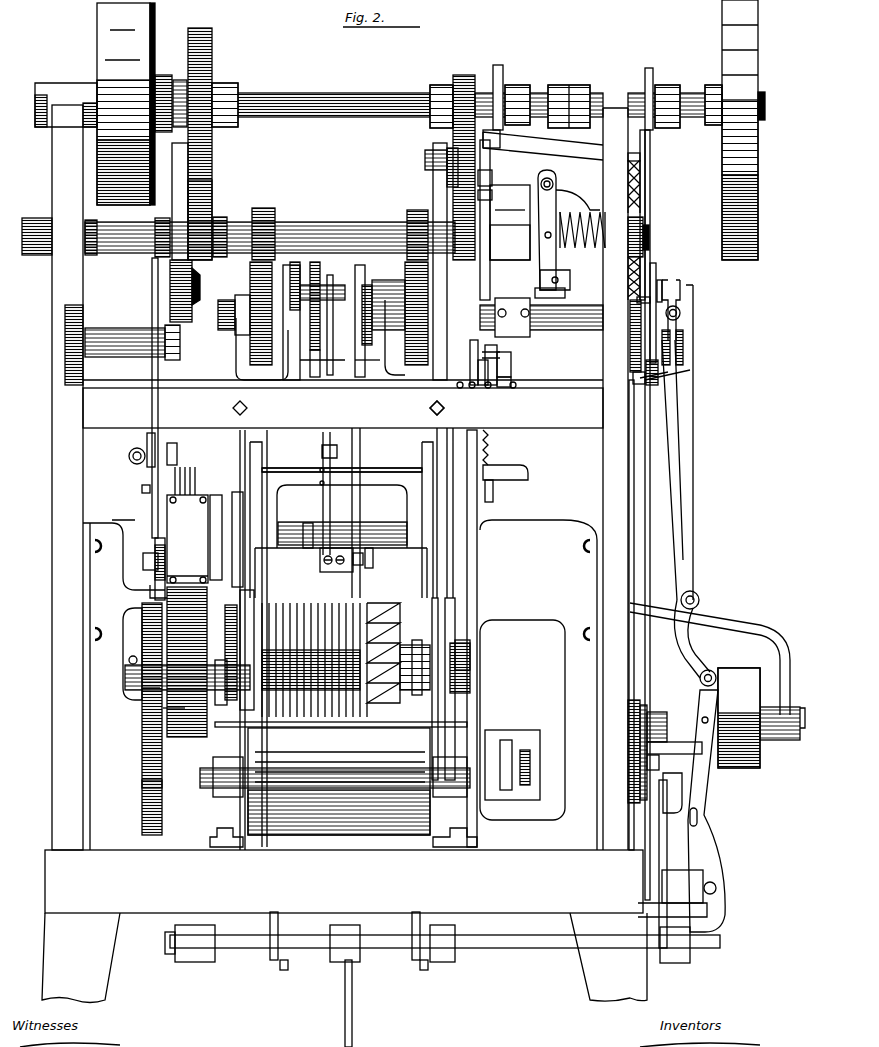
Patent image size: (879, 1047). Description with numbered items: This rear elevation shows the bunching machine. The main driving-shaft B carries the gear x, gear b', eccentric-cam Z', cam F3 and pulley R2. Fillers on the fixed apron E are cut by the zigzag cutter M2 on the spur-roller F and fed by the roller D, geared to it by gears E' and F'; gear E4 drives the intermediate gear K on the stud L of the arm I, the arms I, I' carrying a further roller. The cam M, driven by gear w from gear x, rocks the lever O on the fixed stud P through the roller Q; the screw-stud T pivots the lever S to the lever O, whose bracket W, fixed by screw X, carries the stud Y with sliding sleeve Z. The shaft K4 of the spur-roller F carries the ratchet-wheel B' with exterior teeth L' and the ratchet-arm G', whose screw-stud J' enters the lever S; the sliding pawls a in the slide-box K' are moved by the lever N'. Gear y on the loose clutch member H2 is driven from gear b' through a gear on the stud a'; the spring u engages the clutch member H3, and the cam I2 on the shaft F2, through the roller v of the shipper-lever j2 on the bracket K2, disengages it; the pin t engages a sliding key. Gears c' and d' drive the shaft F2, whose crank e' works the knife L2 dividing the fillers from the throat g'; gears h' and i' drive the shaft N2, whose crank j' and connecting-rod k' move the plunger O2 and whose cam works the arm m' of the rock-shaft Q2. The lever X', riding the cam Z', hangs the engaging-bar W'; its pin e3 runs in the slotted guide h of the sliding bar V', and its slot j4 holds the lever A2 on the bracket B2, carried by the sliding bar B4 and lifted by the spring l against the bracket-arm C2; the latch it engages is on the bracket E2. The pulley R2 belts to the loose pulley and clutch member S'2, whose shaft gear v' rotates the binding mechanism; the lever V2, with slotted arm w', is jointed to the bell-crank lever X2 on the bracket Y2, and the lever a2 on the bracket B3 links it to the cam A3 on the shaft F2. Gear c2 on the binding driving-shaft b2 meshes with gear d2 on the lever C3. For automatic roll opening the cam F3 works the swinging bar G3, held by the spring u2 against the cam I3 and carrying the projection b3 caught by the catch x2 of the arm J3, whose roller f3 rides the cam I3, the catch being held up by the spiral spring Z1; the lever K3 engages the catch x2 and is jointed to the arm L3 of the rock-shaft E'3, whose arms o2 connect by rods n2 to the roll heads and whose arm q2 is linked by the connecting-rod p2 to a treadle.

The fixed stud P is at (143, 342).
The gear x is at (219, 50).
The gear w is at (198, 251).
The main driving-shaft B is at (332, 101).
The gear b' is at (464, 159).
The eccentric-cam Z' is at (507, 96).
The cam F3 is at (650, 72).
The pulley R2 is at (722, 55).
The lever N' is at (270, 232).
The roller Q is at (167, 237).
The cam M is at (180, 201).
The lever O is at (152, 300).
The gear i' is at (271, 229).
The gear d' is at (405, 232).
The sliding sleeve Z is at (427, 261).
The gear y is at (447, 195).
The stud a' is at (491, 220).
The pendent engaging-bar W' is at (493, 177).
The pin t is at (482, 195).
The lever X' is at (501, 139).
The elongated stud Y is at (118, 460).
The clutch member H3 is at (510, 222).
The friction-clutch member H2 is at (523, 246).
The shipper-lever j2 is at (547, 230).
The bracket K2 is at (585, 200).
The connecting-rod p2 is at (645, 172).
The spring u2 is at (645, 202).
The shaft N2 is at (218, 318).
The gear h' is at (262, 321).
The bracket E2 is at (295, 321).
The crank j' is at (322, 319).
The connecting-rod k' is at (334, 325).
The crank e' is at (369, 320).
The gear c' is at (400, 318).
The arm m' is at (322, 367).
The throat g' is at (367, 367).
The slotted guide h is at (465, 362).
The guiding pin e3 is at (478, 366).
The slot j4 is at (496, 361).
The bracket B2 is at (512, 364).
The lever A2 is at (496, 376).
The shaft F2 is at (578, 326).
The spiral spring u is at (572, 282).
The roller v is at (563, 280).
The cam I2 is at (550, 294).
The sliding bar V' is at (450, 405).
The arm J3 is at (640, 485).
The cam I3 is at (656, 288).
The roller f3 is at (666, 283).
The spiral spring Z1 is at (645, 400).
The catch x2 is at (657, 372).
The projection b3 is at (665, 377).
The swinging bar G3 is at (676, 366).
The cam A3 is at (682, 296).
The lever a2 is at (683, 400).
The bracket B3 is at (670, 460).
The lever K3 is at (668, 568).
The slotted arm w' is at (717, 670).
The lever V2 is at (716, 683).
The loose pulley and friction-clutch member S'2 is at (739, 718).
The bell-crank lever X2 is at (708, 858).
The arm L3 is at (660, 866).
The bracket Y2 is at (672, 893).
The gear v' is at (637, 740).
The gear d2 is at (652, 745).
The lever C3 is at (674, 747).
The gear c2 is at (652, 766).
The driving-shaft b2 is at (687, 789).
The bracket W is at (135, 450).
The screw X is at (181, 454).
The sliding pawls a is at (195, 472).
The screw-stud T is at (142, 492).
The lever S is at (138, 551).
The slide-box K' is at (205, 539).
The screw-stud J' is at (135, 562).
The ratchet-arm G' is at (150, 591).
The stud L is at (188, 662).
The ratchet-wheel B' is at (167, 695).
The shaft K4 is at (128, 660).
The gear E' is at (132, 693).
The exterior ratchet-teeth L' is at (155, 719).
The gear F' is at (134, 790).
The intermediate gear K is at (224, 651).
The arm I is at (342, 650).
The gear E4 is at (232, 690).
The spur-roller F is at (311, 651).
The rotary zigzag cutter M2 is at (386, 612).
The arm I' is at (460, 668).
The fixed apron E is at (341, 732).
The roller D is at (300, 746).
The plunger O2 is at (380, 476).
The rock-shaft Q2 is at (340, 545).
The knife L2 is at (375, 556).
The spiral spring l is at (483, 446).
The bracket-arm C2 is at (528, 468).
The sliding bar B4 is at (493, 486).
The rock-shaft E'3 is at (445, 953).
The rods n2 is at (420, 925).
The arm q2 is at (358, 958).
The arms o2 is at (430, 965).